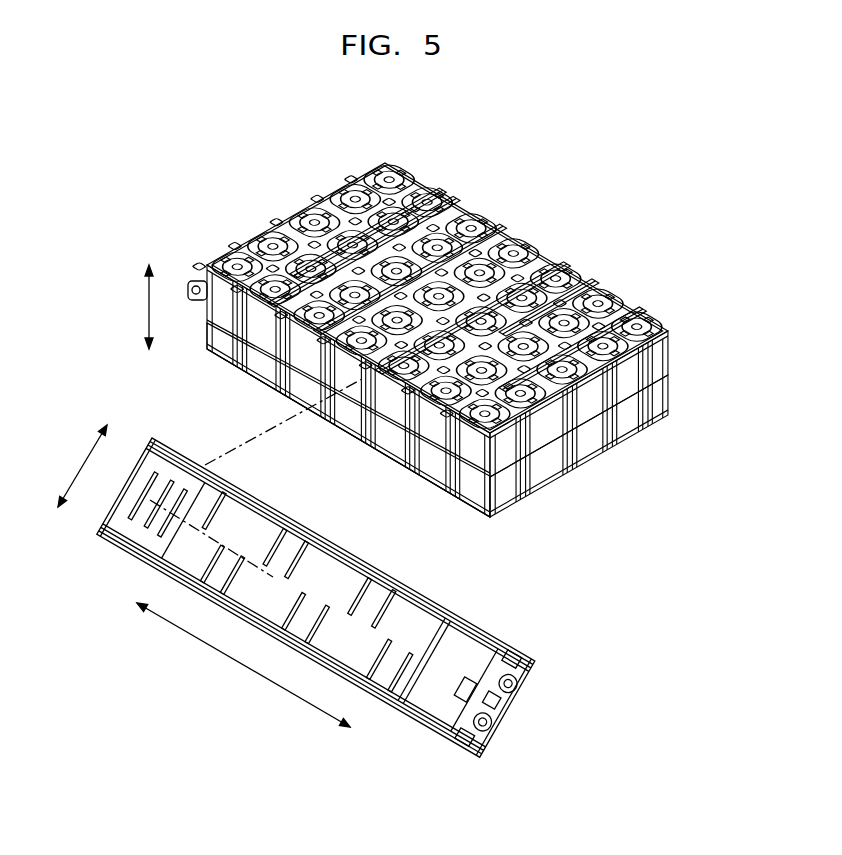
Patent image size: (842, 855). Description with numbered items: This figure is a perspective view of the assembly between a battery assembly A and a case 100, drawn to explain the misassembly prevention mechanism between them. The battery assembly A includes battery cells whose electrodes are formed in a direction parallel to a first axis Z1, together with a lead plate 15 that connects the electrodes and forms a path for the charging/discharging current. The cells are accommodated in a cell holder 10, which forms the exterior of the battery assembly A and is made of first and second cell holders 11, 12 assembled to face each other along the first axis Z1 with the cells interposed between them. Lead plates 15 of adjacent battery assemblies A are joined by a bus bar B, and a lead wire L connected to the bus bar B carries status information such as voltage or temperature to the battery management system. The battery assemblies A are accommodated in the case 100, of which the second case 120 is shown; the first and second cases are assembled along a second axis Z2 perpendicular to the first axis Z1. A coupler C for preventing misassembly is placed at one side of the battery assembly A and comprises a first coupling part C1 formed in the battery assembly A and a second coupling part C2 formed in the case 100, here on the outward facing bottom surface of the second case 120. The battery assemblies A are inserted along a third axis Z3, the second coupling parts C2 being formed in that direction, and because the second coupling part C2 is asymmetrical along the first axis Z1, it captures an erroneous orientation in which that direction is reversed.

The battery assembly A is at (468, 192).
The cell holder 10 is at (727, 345).
The first cell holder 11 is at (665, 356).
The second cell holder 12 is at (665, 401).
The lead plate 15 is at (323, 203).
The bus bar B is at (304, 269).
The lead wire L is at (437, 190).
The coupler C is at (146, 360).
The first coupling part C1 is at (210, 334).
The second coupling part C2 is at (215, 507).
The second case 120 is at (524, 716).
The case 100 is at (369, 601).
The first axis Z1 is at (104, 386).
The second axis Z2 is at (283, 422).
The third axis Z3 is at (243, 665).